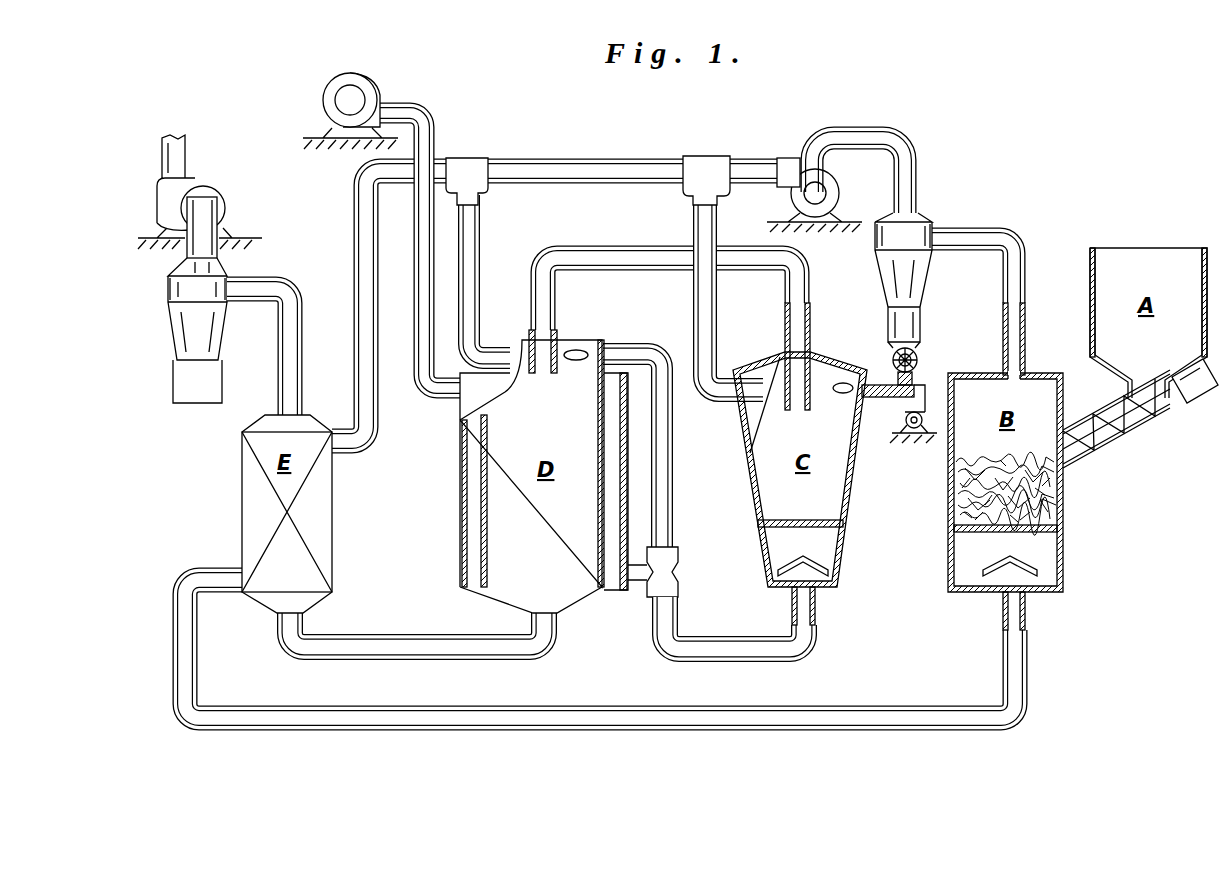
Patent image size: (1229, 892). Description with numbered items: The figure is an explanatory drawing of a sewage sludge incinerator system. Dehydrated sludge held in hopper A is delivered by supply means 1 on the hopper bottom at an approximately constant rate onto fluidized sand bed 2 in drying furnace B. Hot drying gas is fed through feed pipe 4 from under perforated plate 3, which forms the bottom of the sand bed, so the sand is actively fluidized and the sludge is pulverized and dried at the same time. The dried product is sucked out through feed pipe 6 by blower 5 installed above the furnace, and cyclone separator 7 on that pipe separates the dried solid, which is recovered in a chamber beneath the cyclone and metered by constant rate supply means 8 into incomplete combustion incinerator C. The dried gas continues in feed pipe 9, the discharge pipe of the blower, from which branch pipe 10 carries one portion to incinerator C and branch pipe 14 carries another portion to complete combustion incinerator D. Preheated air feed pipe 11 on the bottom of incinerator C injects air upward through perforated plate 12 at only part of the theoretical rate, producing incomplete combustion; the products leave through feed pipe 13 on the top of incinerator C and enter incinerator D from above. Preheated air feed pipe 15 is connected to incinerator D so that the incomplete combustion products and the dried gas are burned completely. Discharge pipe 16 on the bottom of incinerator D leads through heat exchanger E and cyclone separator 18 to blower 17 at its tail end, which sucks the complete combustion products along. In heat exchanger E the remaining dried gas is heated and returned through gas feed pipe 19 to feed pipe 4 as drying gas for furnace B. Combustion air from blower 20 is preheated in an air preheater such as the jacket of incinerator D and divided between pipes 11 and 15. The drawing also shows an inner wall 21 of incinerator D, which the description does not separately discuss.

The supply means 1 is at (1135, 430).
The fluidized sand bed 2 is at (1060, 496).
The perforated plate 3 is at (1060, 530).
The feed pipe 4 is at (1030, 612).
The blower 5 is at (785, 160).
The feed pipe 6 is at (988, 228).
The cyclone separator 7 is at (888, 277).
The constant rate supply means 8 is at (882, 398).
The feed pipe 9 is at (655, 160).
The branch pipe 10 is at (693, 227).
The preheated air feed pipe 11 is at (818, 608).
The perforated plate 12 is at (835, 528).
The feed pipe 13 is at (789, 297).
The branch pipe 14 is at (481, 240).
The preheated air feed pipe 15 is at (640, 345).
The discharge pipe 16 is at (500, 652).
The blower 17 is at (218, 185).
The cyclone separator / jacket 18 is at (184, 340).
The gas feed pipe 19 is at (600, 718).
The blower 20 is at (372, 86).
The inner wall of vessel D 21 is at (476, 500).